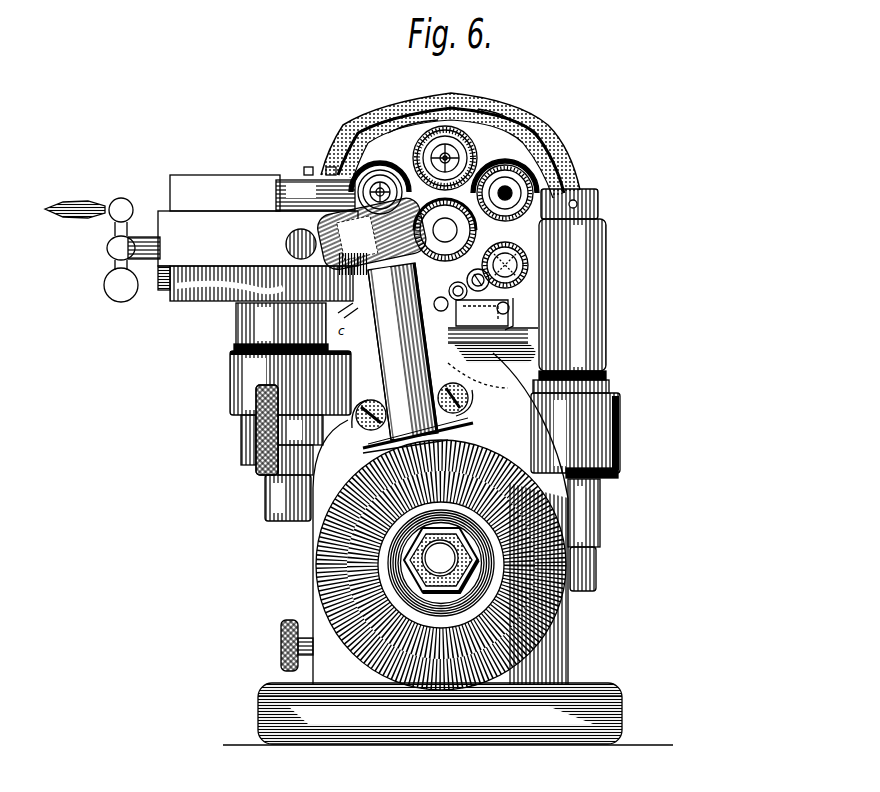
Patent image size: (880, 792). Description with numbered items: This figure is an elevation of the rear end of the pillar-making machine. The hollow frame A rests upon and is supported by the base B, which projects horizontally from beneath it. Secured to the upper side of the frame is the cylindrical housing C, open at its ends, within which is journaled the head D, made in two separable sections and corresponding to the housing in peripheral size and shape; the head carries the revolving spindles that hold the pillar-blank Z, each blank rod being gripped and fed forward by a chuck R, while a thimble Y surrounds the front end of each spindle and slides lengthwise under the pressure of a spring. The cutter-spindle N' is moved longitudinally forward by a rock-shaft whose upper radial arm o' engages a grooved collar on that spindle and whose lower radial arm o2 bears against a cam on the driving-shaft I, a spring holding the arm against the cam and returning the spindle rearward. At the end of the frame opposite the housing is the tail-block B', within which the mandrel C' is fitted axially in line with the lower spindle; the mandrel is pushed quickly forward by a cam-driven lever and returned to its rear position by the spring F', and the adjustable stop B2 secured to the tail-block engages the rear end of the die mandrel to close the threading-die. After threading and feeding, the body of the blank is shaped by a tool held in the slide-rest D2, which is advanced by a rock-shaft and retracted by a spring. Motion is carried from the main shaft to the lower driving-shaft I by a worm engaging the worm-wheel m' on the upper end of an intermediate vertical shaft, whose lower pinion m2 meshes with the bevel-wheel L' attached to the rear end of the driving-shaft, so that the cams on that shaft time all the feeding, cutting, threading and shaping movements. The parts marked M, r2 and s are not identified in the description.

The chuck R is at (410, 112).
The cylindrical housing C is at (445, 132).
The pillar-blank Z is at (487, 125).
The journaled head D is at (512, 150).
The cutter-spindle N' is at (551, 152).
The thimble Y is at (362, 162).
The stop lugs r2 is at (358, 130).
The lower radial arm o2 is at (553, 180).
The upper radial arm o' is at (587, 195).
The mandrel C' is at (445, 277).
The gear s is at (538, 257).
The tail-block B' is at (485, 330).
The slide-rest D2 is at (258, 238).
The worm-wheel m' is at (301, 234).
The spring F' is at (290, 412).
The swinging arm M is at (356, 440).
The pinion m2 is at (389, 460).
The adjustable stop B2 is at (582, 274).
The hollow frame A is at (454, 518).
The bevel-wheel L' is at (423, 565).
The driving-shaft I is at (441, 563).
The base B is at (448, 728).